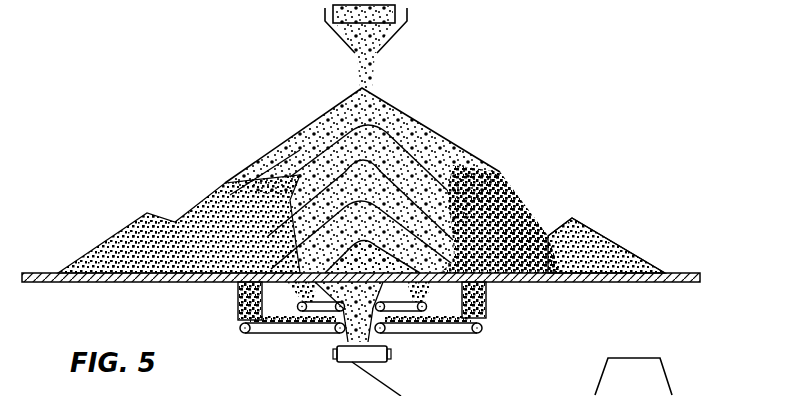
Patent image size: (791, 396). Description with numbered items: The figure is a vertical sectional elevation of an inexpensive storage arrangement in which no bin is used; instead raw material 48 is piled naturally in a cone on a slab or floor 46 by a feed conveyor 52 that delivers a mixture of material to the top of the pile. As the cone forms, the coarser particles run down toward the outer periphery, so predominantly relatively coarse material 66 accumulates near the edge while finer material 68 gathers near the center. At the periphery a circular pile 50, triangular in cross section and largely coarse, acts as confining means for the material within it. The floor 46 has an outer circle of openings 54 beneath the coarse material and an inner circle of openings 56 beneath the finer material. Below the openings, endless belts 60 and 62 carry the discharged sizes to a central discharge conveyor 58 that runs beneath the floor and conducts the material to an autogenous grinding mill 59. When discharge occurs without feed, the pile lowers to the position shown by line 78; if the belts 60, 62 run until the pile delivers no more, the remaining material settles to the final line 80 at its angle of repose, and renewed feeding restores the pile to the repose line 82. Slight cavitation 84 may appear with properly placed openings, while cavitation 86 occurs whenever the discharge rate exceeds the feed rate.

The floor 46 is at (585, 284).
The material 48 is at (513, 187).
The circular pile 50 is at (598, 228).
The feed conveyor 52 is at (330, 22).
The outer openings 54 is at (244, 284).
The inner openings 56 is at (296, 284).
The central discharge conveyor 58 is at (385, 353).
The autogenous grinding mill 59 is at (653, 384).
The endless belts 60 is at (292, 334).
The endless belts 62 is at (313, 312).
The relatively coarse material 66 is at (247, 167).
The finer material 68 is at (343, 152).
The line 78 is at (528, 205).
The final line 80 is at (163, 222).
The repose line 82 is at (423, 121).
The cavitation 84 is at (297, 170).
The cavitation 86 is at (493, 174).